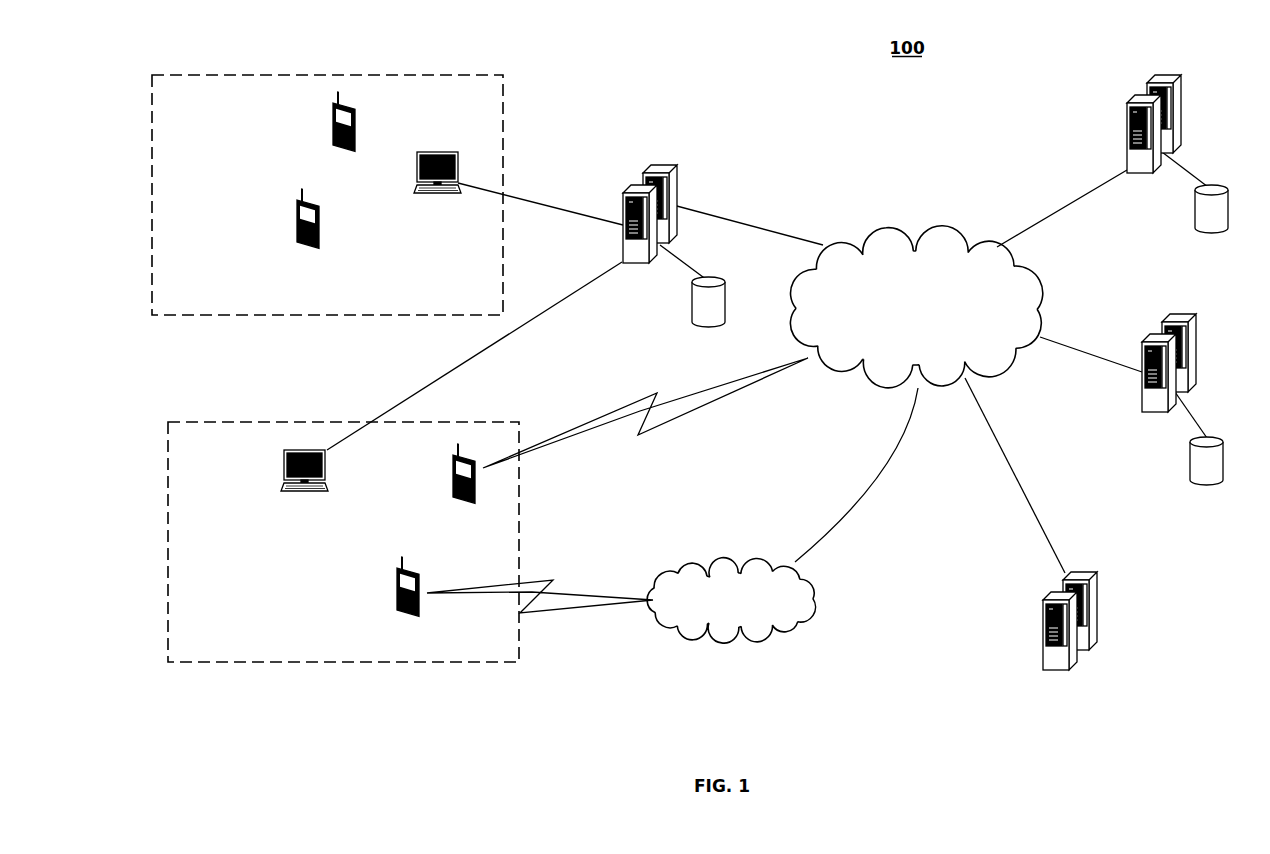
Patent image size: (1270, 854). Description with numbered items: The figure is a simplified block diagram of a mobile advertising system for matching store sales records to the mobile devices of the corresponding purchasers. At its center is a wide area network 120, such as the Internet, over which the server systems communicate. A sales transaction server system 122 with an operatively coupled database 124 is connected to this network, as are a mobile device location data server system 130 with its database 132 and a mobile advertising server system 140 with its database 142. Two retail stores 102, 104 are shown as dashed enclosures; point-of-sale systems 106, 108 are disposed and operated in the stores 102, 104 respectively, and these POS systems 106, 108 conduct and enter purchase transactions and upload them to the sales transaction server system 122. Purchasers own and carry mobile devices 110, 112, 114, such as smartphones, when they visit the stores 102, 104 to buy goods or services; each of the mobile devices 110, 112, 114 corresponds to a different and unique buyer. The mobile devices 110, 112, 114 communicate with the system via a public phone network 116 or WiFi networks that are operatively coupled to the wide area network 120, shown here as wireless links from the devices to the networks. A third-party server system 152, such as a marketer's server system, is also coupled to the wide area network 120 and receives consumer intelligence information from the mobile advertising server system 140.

The retail store 102 is at (265, 663).
The retail store 104 is at (216, 318).
The point-of-sale system 106 is at (320, 488).
The point-of-sale system 108 is at (448, 192).
The mobile device 110 is at (302, 223).
The mobile device 112 is at (453, 460).
The mobile device 114 is at (333, 110).
The public phone network 116 is at (787, 632).
The wide area network 120 is at (905, 232).
The sales transaction server system 122 is at (677, 167).
The database 124 is at (690, 300).
The mobile device location data server system 130 is at (1127, 135).
The database 132 is at (1193, 210).
The mobile advertising server system 140 is at (1140, 403).
The database 142 is at (1192, 485).
The third-party server system 152 is at (1043, 660).